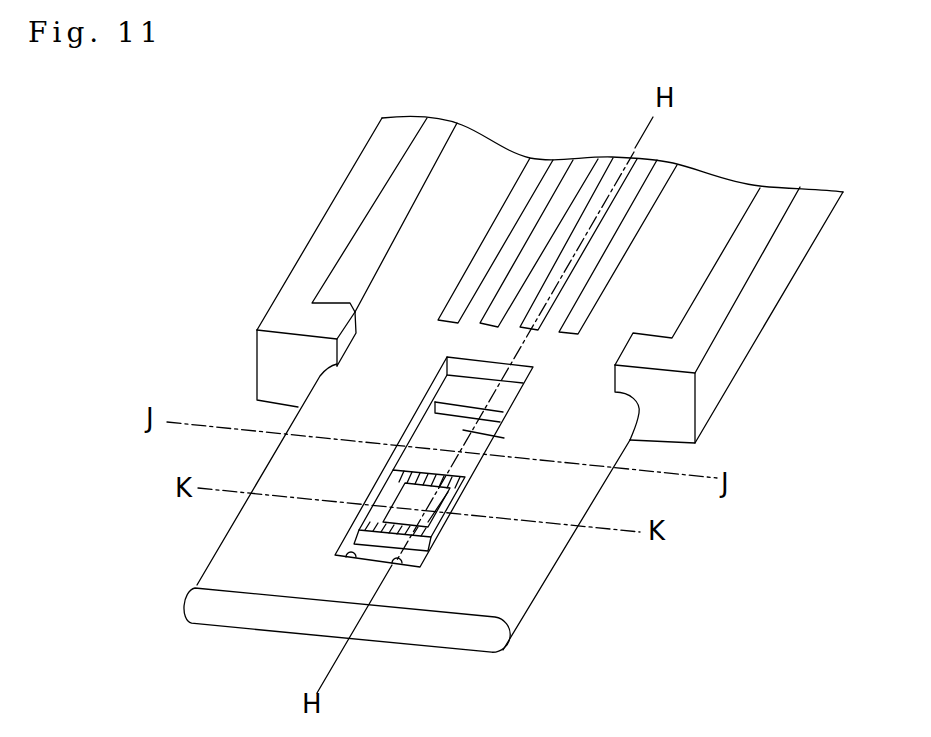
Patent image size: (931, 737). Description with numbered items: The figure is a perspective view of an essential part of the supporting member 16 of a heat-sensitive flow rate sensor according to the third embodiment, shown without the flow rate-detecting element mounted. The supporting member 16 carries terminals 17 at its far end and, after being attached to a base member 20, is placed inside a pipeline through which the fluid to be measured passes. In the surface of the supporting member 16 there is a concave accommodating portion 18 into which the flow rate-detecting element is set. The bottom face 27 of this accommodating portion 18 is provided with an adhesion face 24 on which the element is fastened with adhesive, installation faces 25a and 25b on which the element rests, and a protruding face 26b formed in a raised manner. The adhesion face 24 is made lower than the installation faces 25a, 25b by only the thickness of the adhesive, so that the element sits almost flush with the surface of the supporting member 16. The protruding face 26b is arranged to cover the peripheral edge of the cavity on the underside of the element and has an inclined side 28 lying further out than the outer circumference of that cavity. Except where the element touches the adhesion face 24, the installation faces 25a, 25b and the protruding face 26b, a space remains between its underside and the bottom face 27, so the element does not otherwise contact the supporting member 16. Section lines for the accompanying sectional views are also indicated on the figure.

The supporting member 16 is at (482, 637).
The terminals 17 is at (647, 198).
The concave accommodating portion 18 is at (432, 418).
The base member 20 is at (737, 270).
The adhesion face 24 is at (502, 398).
The installation face 25a is at (347, 557).
The installation face 25b is at (400, 563).
The protruding face 26b is at (437, 528).
The bottom face 27 is at (470, 442).
The inclined side 28 is at (395, 502).